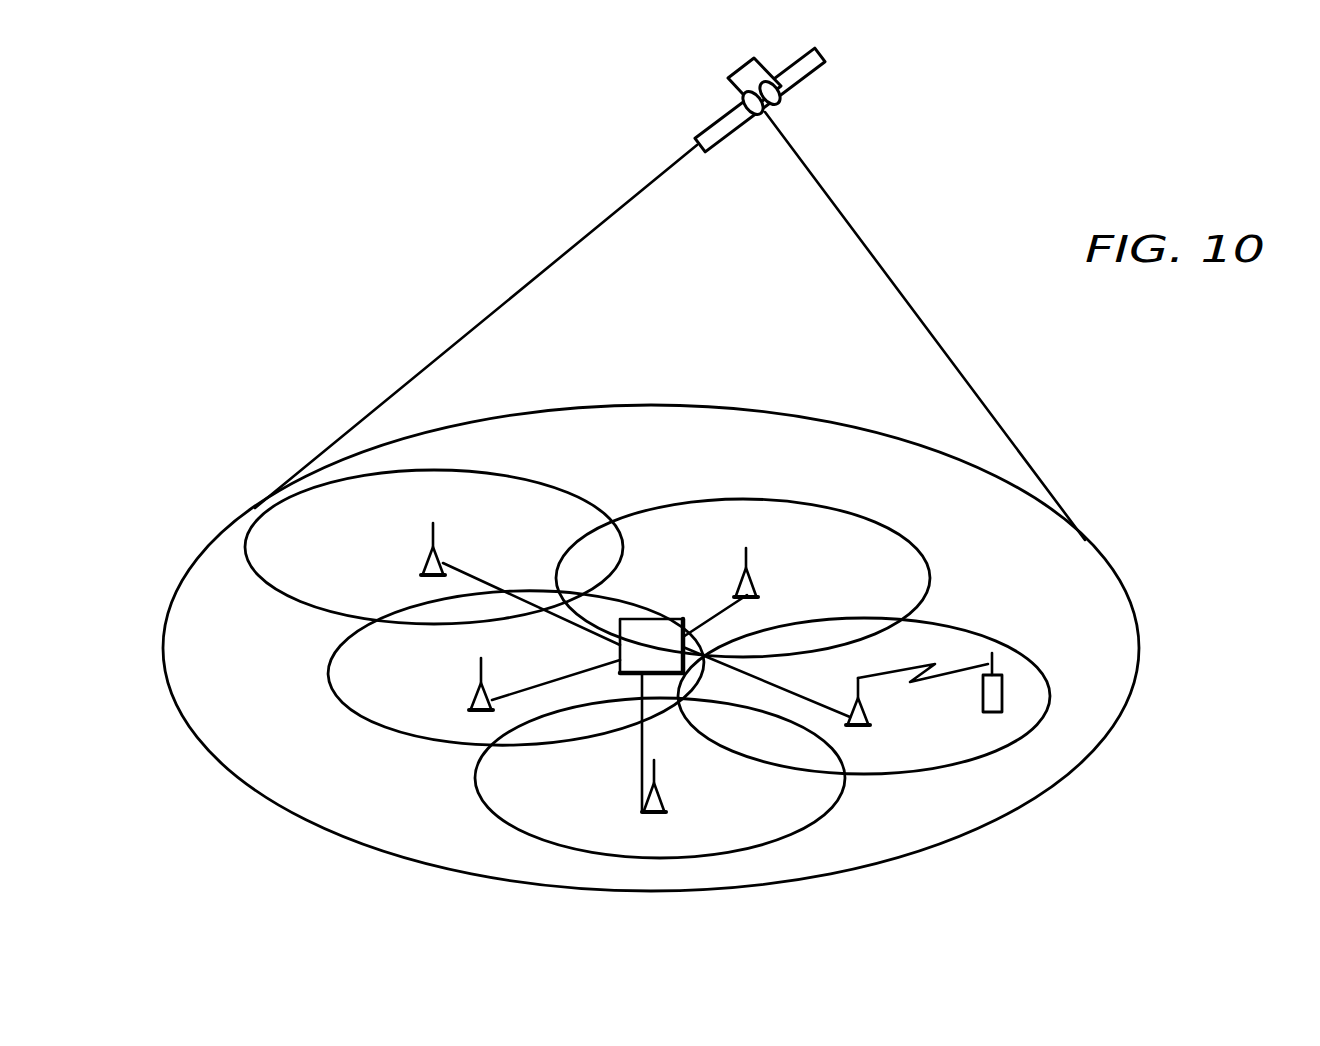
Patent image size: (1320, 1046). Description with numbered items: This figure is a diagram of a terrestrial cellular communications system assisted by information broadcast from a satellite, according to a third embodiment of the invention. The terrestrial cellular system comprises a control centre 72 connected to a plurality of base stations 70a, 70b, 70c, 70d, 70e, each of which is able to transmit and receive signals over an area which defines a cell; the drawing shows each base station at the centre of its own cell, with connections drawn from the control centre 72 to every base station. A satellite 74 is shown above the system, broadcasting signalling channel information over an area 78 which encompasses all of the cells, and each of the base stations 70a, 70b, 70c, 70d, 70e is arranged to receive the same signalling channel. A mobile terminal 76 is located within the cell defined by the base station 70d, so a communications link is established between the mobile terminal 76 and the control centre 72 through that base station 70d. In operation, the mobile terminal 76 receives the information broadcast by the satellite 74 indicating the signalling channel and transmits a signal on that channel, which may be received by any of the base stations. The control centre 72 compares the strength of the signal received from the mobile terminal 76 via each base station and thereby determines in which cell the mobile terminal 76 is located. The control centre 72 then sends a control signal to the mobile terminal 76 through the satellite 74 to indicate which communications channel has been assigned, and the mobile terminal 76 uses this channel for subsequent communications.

The base station 70a is at (422, 563).
The base station 70b is at (753, 577).
The base station 70c is at (472, 697).
The base station 70d is at (870, 722).
The base station 70e is at (665, 800).
The control centre 72 is at (667, 627).
The satellite 74 is at (735, 78).
The mobile terminal 76 is at (1002, 697).
The area 78 is at (1140, 652).